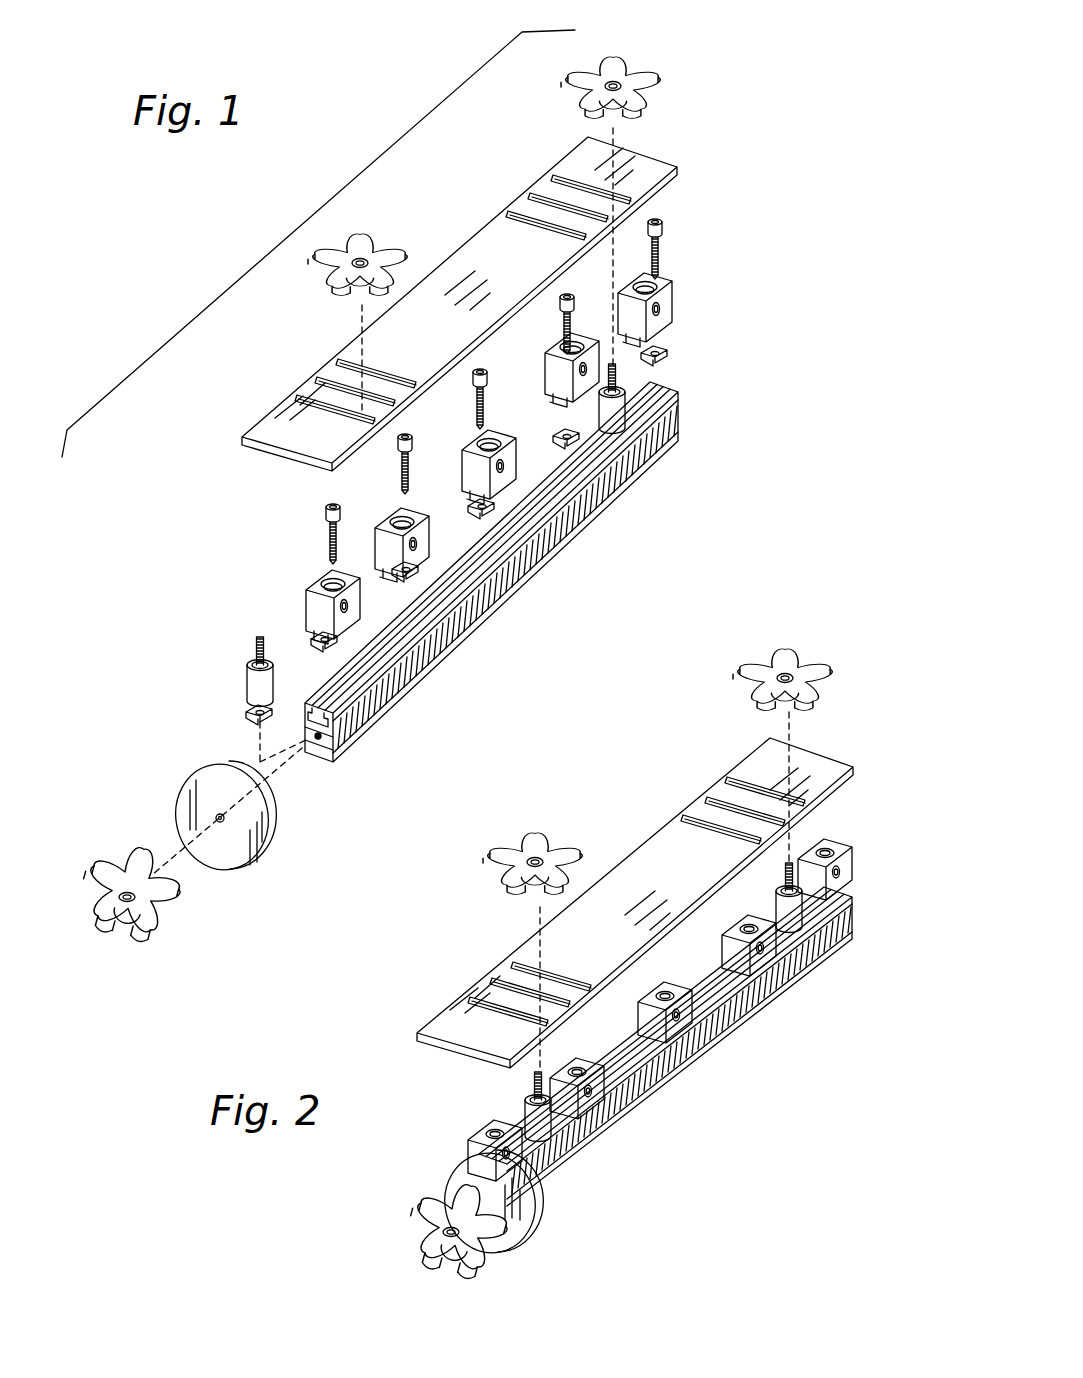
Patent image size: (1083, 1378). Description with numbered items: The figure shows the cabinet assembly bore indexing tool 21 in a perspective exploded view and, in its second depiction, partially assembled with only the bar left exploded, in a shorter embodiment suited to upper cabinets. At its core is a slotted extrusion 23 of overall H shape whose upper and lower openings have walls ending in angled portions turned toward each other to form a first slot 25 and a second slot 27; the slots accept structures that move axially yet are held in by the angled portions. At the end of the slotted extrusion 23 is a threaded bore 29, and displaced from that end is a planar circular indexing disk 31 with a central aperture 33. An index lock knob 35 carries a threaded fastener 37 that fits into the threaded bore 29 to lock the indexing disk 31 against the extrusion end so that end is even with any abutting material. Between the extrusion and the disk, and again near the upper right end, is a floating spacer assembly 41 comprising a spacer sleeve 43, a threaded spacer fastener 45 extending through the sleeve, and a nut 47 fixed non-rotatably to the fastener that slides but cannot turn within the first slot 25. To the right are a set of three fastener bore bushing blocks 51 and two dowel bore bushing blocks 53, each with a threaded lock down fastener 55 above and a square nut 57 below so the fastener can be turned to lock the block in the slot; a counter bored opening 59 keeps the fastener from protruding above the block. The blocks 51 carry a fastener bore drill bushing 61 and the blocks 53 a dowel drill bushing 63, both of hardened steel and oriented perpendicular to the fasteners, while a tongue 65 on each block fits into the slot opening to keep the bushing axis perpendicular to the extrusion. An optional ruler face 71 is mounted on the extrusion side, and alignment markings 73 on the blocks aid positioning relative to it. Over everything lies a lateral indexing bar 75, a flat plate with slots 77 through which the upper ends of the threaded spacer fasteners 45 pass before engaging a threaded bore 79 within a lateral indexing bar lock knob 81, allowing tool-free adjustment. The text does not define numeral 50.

In FIG. 1, the cabinet assembly bore indexing tool 21 is at (336, 207).
In FIG. 2, the cabinet assembly bore indexing tool 21 is at (360, 1054).
In FIG. 1, the slotted extrusion 23 is at (384, 628).
In FIG. 2, the slotted extrusion 23 is at (672, 1046).
In FIG. 1, the first slot 25 is at (306, 733).
In FIG. 1, the second slot 27 is at (322, 767).
In FIG. 1, the threaded bore 29 is at (308, 744).
In FIG. 1, the indexing disk 31 is at (197, 845).
In FIG. 2, the indexing disk 31 is at (530, 1250).
In FIG. 1, the central aperture 33 is at (218, 817).
In FIG. 1, the index lock knob 35 is at (124, 896).
In FIG. 2, the index lock knob 35 is at (436, 1214).
In FIG. 1, the threaded fastener 37 is at (125, 905).
In FIG. 2, the threaded fastener 37 is at (448, 1233).
In FIG. 1, the floating spacer assembly 41 is at (417, 544).
In FIG. 2, the floating spacer assembly 41 is at (644, 999).
In FIG. 1, the spacer sleeve 43 is at (246, 690).
In FIG. 2, the spacer sleeve 43 is at (805, 920).
In FIG. 1, the threaded spacer fastener 45 is at (255, 645).
In FIG. 2, the threaded spacer fastener 45 is at (792, 865).
In FIG. 1, the nut 47 is at (248, 716).
In FIG. 1, the clamp block assembly 50 is at (645, 280).
In FIG. 1, the fastener bore bushing block 51 is at (483, 490).
In FIG. 2, the fastener bore bushing block 51 is at (652, 1043).
In FIG. 1, the dowel bore bushing block 53 is at (380, 520).
In FIG. 2, the dowel bore bushing block 53 is at (665, 998).
In FIG. 1, the threaded lock down fastener 55 is at (660, 250).
In FIG. 2, the threaded lock down fastener 55 is at (832, 848).
In FIG. 1, the square nut 57 is at (668, 357).
In FIG. 1, the counter bored opening 59 is at (315, 578).
In FIG. 1, the fastener bore drill bushing 61 is at (662, 313).
In FIG. 2, the fastener bore drill bushing 61 is at (838, 880).
In FIG. 1, the dowel drill bushing 63 is at (578, 490).
In FIG. 2, the dowel drill bushing 63 is at (790, 940).
In FIG. 1, the tongue 65 is at (640, 352).
In FIG. 1, the ruler face 71 is at (360, 710).
In FIG. 2, the ruler face 71 is at (680, 1050).
In FIG. 1, the alignment markings 73 is at (658, 312).
In FIG. 2, the alignment markings 73 is at (838, 866).
In FIG. 1, the lateral indexing bar 75 is at (264, 432).
In FIG. 2, the lateral indexing bar 75 is at (810, 760).
In FIG. 1, the slots 77 is at (297, 395).
In FIG. 2, the slots 77 is at (683, 815).
In FIG. 1, the threaded bore 79 is at (365, 262).
In FIG. 2, the threaded bore 79 is at (535, 862).
In FIG. 1, the lateral indexing bar lock knob 81 is at (488, 222).
In FIG. 2, the lateral indexing bar lock knob 81 is at (649, 752).